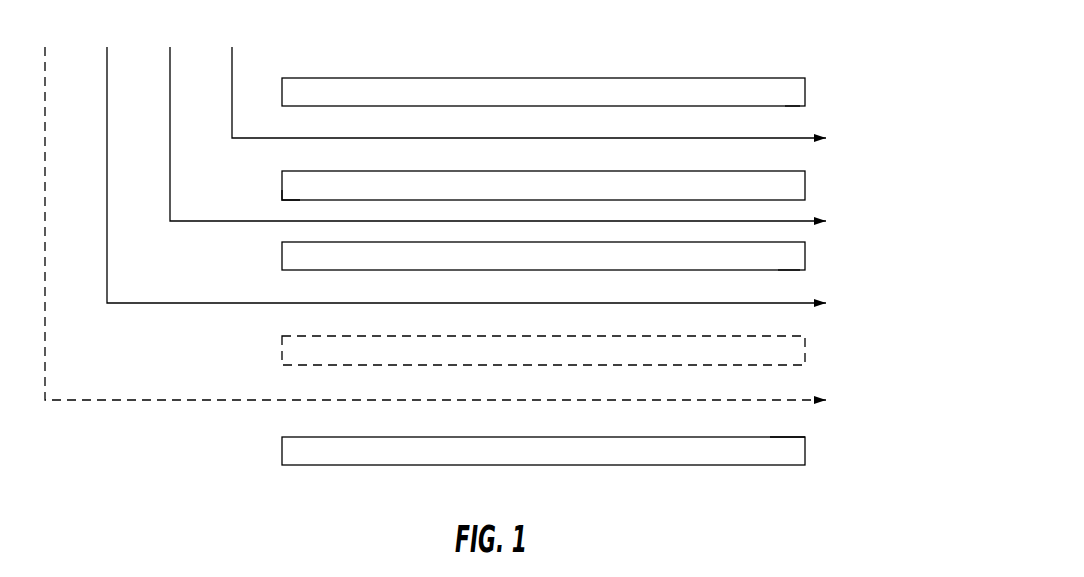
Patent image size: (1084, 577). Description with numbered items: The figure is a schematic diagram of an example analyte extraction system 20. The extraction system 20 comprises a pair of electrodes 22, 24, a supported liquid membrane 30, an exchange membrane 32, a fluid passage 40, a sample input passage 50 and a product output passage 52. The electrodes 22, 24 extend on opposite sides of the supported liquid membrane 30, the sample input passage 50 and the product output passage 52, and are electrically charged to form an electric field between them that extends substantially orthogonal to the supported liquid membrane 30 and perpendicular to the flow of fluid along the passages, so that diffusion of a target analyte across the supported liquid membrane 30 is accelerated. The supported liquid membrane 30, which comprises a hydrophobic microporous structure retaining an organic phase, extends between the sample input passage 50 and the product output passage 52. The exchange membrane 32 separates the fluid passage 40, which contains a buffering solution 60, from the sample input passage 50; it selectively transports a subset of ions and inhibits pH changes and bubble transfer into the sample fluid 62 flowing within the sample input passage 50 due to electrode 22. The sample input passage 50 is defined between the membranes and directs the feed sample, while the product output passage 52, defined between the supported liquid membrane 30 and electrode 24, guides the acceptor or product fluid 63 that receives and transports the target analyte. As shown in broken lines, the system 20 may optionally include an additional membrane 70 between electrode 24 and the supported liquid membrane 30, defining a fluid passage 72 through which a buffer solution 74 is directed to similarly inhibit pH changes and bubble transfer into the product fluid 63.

The extraction system 20 is at (914, 90).
The electrode 22 is at (625, 78).
The electrode 24 is at (615, 465).
The supported liquid membrane 30 is at (805, 257).
The exchange membrane 32 is at (788, 171).
The fluid passage 40 is at (783, 106).
The sample input passage 50 is at (300, 200).
The product output passage 52 is at (778, 270).
The buffering solution 60 is at (669, 141).
The sample fluid 62 is at (812, 221).
The product fluid 63 is at (810, 304).
The additional membrane 70 is at (282, 352).
The fluid passage 72 is at (770, 437).
The buffer solution 74 is at (810, 402).